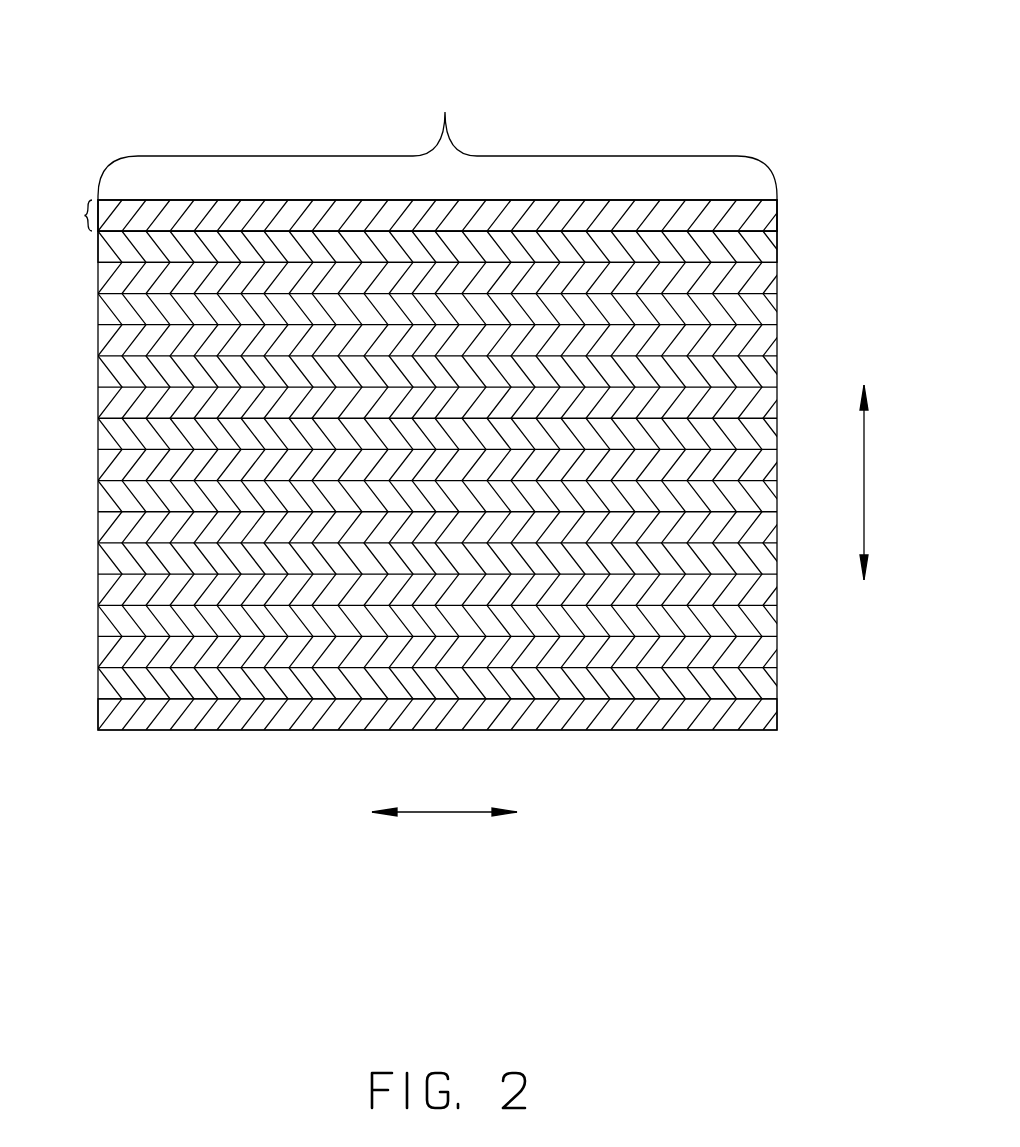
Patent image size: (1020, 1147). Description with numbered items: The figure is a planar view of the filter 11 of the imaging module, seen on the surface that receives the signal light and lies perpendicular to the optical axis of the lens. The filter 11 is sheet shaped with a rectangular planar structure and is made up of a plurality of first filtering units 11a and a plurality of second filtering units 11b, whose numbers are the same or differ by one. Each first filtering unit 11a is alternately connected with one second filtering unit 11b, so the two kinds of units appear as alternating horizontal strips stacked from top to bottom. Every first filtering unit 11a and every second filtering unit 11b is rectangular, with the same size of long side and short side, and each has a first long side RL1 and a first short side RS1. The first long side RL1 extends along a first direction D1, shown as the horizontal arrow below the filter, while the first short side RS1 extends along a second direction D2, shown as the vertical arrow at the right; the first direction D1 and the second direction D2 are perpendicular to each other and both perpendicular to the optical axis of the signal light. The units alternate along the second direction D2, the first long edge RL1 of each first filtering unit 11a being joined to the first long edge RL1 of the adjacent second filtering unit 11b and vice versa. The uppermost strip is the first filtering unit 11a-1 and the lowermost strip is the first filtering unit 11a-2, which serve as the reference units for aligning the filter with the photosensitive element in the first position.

The filter 11 is at (477, 24).
The first filtering unit 11a is at (758, 218).
The second filtering unit 11b is at (758, 253).
The first filtering unit 11a-1 is at (670, 222).
The first filtering unit 11a-2 is at (757, 719).
The first long side RL1 is at (437, 136).
The first short side RS1 is at (66, 210).
The first direction D1 is at (444, 795).
The second direction D2 is at (880, 482).